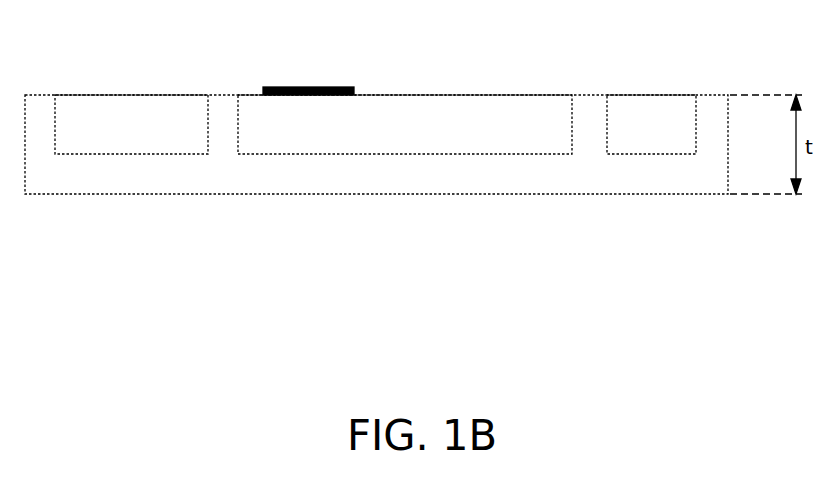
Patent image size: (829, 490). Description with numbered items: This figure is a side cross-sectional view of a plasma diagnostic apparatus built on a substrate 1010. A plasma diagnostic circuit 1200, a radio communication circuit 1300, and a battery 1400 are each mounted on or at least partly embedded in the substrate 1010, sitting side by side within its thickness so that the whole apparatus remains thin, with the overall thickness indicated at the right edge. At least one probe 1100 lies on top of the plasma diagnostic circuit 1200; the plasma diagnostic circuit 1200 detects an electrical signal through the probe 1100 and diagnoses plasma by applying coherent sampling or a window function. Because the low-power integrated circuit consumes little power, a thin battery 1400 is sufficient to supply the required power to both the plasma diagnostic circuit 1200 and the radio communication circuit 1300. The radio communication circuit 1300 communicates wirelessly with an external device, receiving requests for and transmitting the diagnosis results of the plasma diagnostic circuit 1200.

The substrate 1010 is at (598, 185).
The probe 1100 is at (301, 87).
The plasma diagnostic circuit 1200 is at (509, 94).
The radio communication circuit 1300 is at (652, 94).
The battery 1400 is at (125, 94).